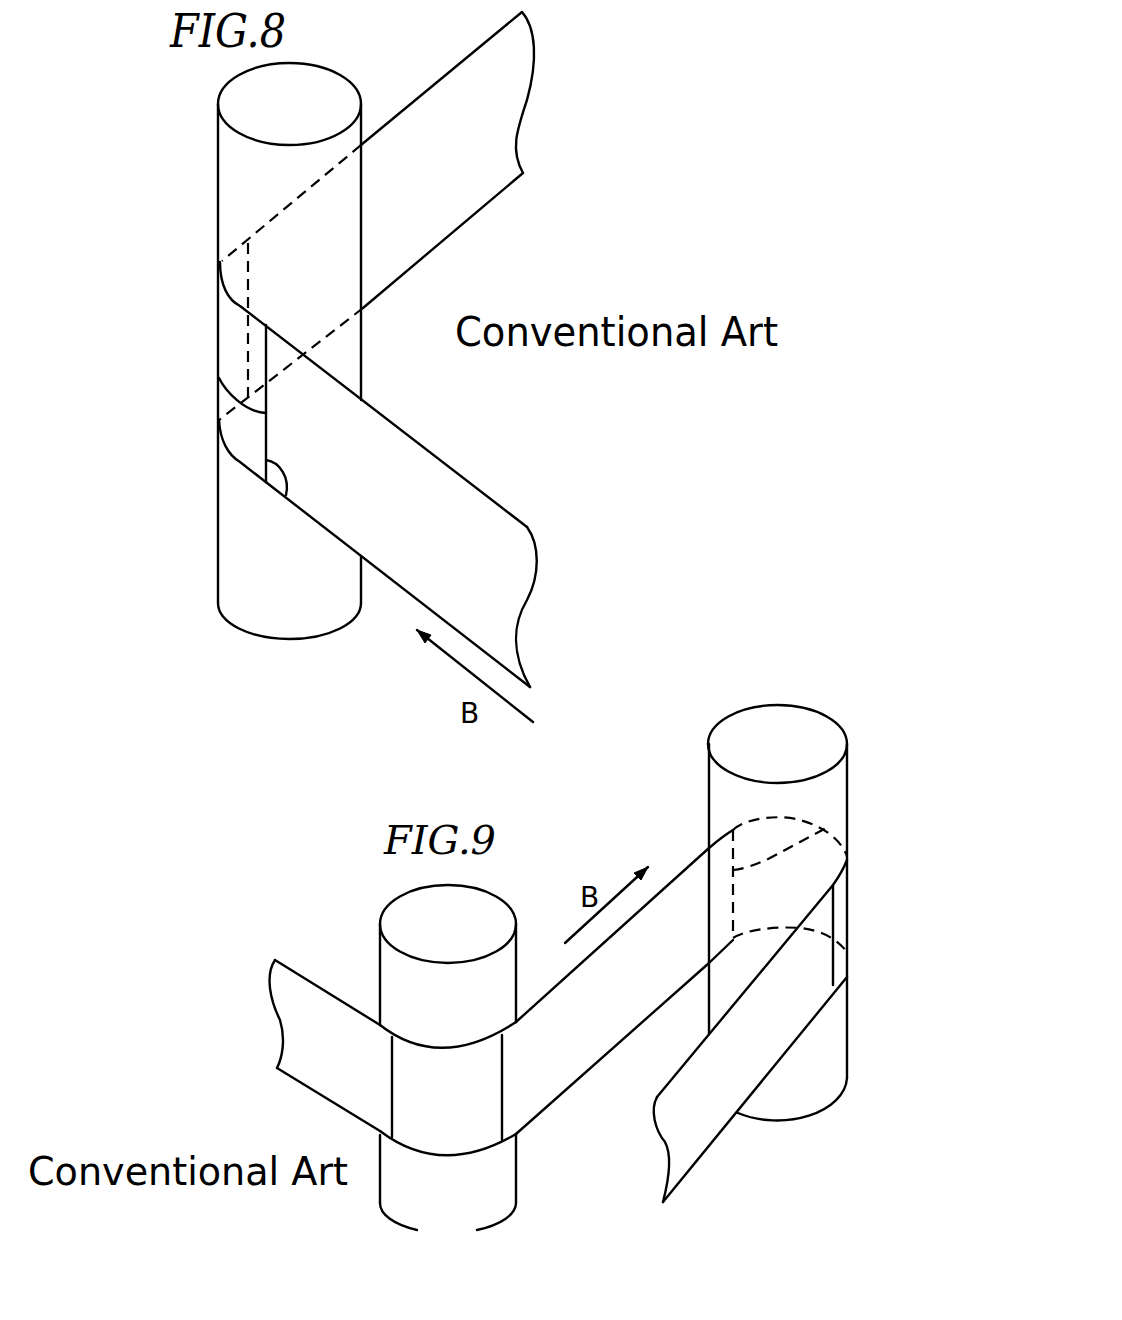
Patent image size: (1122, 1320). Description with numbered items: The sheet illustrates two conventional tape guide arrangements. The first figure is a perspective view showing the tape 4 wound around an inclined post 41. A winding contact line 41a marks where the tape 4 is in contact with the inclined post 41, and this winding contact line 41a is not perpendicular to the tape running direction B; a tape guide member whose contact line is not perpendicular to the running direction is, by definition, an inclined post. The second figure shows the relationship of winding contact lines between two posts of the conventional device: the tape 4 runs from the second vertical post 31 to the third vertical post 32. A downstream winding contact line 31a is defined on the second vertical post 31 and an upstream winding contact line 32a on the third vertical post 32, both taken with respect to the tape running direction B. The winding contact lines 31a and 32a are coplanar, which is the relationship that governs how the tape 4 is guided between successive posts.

In FIG. 8, the tape 4 is at (447, 497).
In FIG. 9, the tape 4 is at (708, 1122).
In FIG. 8, the inclined post 41 is at (253, 588).
In FIG. 8, the winding contact line 41a is at (219, 378).
In FIG. 9, the second vertical post 31 is at (385, 917).
In FIG. 9, the winding contact line 31a is at (508, 1090).
In FIG. 9, the third vertical post 32 is at (793, 702).
In FIG. 9, the winding contact line 32a is at (830, 826).